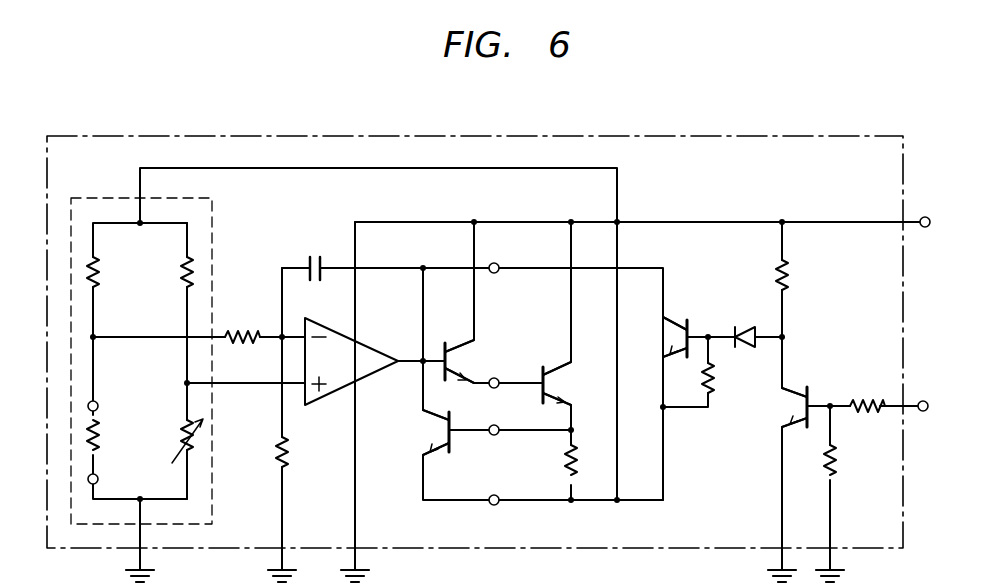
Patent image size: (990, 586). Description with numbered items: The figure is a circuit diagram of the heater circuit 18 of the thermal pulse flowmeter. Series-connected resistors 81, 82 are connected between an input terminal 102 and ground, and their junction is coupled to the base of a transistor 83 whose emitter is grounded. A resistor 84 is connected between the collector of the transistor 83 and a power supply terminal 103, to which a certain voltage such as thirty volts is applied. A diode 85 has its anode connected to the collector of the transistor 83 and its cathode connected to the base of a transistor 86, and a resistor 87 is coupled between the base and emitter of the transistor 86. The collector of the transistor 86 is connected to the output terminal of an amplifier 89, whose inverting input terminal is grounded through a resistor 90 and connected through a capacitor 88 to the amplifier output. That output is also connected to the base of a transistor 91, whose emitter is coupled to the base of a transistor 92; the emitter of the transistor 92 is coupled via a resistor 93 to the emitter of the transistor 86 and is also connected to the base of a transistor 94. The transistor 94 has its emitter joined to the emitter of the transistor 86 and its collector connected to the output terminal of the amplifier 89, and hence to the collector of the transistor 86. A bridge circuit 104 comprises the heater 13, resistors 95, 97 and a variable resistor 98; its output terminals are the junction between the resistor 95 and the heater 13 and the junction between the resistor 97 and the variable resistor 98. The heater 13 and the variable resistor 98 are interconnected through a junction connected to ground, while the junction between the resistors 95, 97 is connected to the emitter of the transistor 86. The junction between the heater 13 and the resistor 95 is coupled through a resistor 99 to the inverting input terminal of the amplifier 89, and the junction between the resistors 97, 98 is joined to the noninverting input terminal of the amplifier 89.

The heater circuit 18 is at (688, 135).
The bridge circuit 104 is at (98, 196).
The resistor 95 is at (99, 270).
The resistor 97 is at (182, 275).
The heater 13 is at (110, 418).
The variable resistor 98 is at (178, 440).
The resistor 99 is at (244, 330).
The capacitor 88 is at (315, 255).
The amplifier 89 is at (378, 348).
The resistor 90 is at (290, 450).
The transistor 91 is at (450, 345).
The transistor 92 is at (560, 383).
The resistor 93 is at (562, 468).
The transistor 94 is at (455, 443).
The transistor 86 is at (673, 330).
The diode 85 is at (745, 325).
The resistor 87 is at (716, 372).
The resistor 84 is at (790, 273).
The transistor 83 is at (797, 408).
The resistor 81 is at (862, 398).
The resistor 82 is at (838, 462).
The input terminal 102 is at (929, 406).
The power supply terminal 103 is at (931, 222).